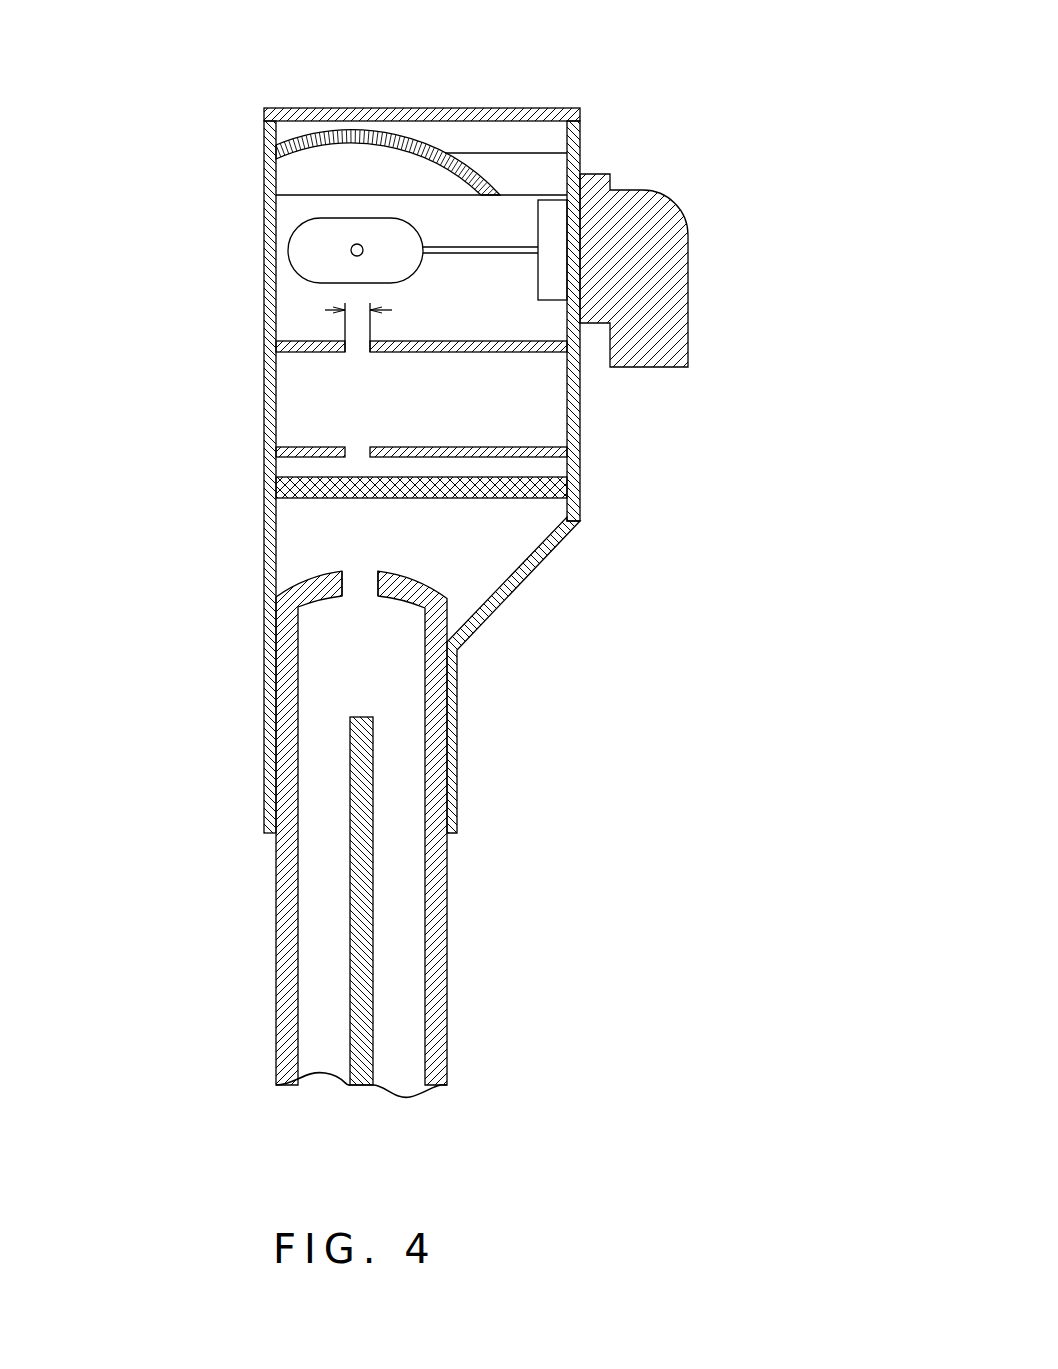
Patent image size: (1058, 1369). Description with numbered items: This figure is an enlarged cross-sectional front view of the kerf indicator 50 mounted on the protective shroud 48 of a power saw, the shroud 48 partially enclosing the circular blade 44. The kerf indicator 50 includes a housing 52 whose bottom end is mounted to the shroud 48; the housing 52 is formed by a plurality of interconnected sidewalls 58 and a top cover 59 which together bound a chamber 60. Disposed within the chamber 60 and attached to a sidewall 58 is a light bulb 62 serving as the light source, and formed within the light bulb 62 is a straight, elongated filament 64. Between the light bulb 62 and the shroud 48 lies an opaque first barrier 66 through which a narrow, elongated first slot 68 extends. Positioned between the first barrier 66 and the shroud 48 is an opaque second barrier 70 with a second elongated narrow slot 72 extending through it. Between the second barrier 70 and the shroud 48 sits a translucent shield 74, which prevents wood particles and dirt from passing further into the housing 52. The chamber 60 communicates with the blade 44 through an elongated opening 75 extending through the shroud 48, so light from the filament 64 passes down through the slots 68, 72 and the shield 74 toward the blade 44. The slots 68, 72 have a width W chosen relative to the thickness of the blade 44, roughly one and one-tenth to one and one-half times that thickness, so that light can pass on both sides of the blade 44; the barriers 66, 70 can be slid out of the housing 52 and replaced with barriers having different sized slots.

The circular blade 44 is at (374, 1008).
The protective shroud 48 is at (448, 866).
The kerf indicator 50 is at (760, 152).
The housing 52 is at (582, 448).
The sidewalls 58 is at (262, 420).
The top cover 59 is at (424, 106).
The chamber 60 is at (313, 313).
The light bulb 62 is at (310, 250).
The filament 64 is at (348, 244).
The first barrier 66 is at (302, 353).
The first slot 68 is at (357, 353).
The second barrier 70 is at (302, 460).
The second slot 72 is at (357, 458).
The translucent shield 74 is at (527, 497).
The elongated opening 75 is at (360, 583).